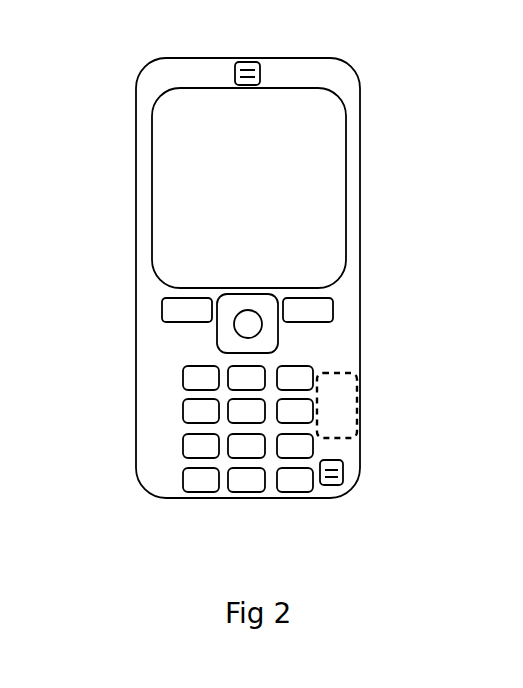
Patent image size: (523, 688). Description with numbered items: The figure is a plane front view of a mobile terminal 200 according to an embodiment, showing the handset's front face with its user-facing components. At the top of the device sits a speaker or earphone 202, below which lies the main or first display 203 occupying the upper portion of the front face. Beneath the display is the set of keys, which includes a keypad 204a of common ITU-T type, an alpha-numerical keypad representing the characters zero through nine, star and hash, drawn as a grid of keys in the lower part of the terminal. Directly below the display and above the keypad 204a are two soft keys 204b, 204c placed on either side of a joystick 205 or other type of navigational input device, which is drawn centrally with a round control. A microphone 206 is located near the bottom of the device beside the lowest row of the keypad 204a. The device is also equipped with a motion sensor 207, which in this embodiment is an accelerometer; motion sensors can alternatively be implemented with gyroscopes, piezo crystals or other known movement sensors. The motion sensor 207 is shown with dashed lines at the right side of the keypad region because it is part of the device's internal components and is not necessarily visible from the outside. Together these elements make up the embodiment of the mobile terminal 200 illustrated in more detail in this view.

The mobile terminal 200 is at (148, 58).
The speaker or earphone 202 is at (245, 62).
The main or first display 203 is at (346, 178).
The keypad 204a is at (183, 480).
The soft key 204b is at (162, 310).
The soft key 204c is at (333, 313).
The joystick 205 is at (278, 332).
The microphone 206 is at (341, 484).
The motion sensor 207 is at (357, 405).